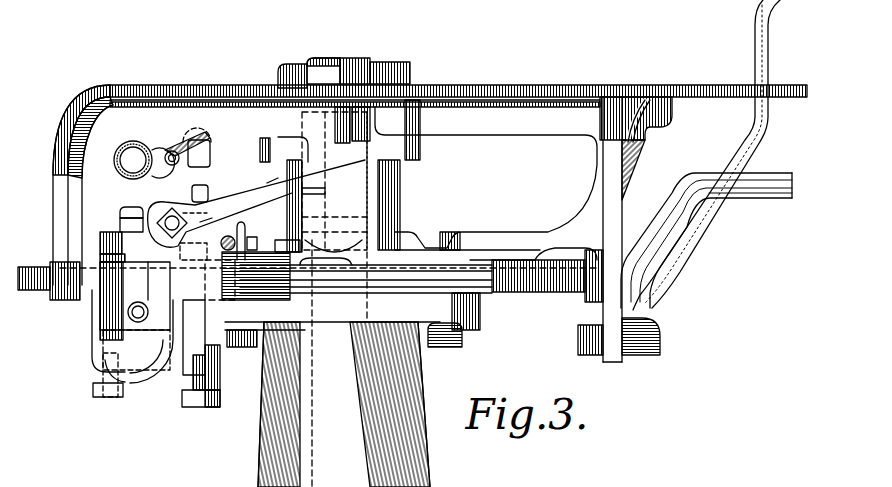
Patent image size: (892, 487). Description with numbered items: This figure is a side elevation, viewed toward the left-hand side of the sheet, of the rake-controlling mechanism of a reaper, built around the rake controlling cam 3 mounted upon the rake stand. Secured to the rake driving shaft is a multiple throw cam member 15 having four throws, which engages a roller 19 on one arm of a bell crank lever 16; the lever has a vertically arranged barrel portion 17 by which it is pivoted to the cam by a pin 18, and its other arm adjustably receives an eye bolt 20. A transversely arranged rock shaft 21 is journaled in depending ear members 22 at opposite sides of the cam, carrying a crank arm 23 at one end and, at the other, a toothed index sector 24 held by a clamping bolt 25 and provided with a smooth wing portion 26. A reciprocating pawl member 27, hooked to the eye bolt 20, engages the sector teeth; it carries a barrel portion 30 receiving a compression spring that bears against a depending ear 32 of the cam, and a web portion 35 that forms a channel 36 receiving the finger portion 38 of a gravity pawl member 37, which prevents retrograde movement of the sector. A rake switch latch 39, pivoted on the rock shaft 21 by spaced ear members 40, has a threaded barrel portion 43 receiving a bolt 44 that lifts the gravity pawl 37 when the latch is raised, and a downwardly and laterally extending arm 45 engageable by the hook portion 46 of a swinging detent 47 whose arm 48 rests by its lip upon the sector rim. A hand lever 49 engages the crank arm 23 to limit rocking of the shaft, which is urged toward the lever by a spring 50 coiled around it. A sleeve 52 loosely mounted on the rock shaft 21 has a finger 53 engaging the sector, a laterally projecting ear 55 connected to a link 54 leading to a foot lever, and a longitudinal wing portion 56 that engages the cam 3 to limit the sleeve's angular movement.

The rake controlling cam 3 is at (532, 86).
The multiple throw cam member 15 is at (421, 148).
The bell crank lever 16 is at (232, 205).
The barrel portion 17 is at (402, 191).
The pin 18 is at (380, 238).
The roller 19 is at (242, 197).
The eye bolt 20 is at (147, 215).
The rock shaft 21 is at (364, 293).
The depending ear members 22 is at (58, 292).
The crank arm 23 is at (692, 176).
The toothed index sector 24 is at (157, 254).
The clamping bolt 25 is at (93, 338).
The wing portion 26 is at (190, 302).
The reciprocating pawl member 27 is at (152, 148).
The barrel portion 30 is at (150, 168).
The depending ear 32 is at (202, 160).
The web portion 35 is at (178, 145).
The channel 36 is at (267, 183).
The gravity pawl member 37 is at (208, 192).
The finger portion 38 is at (205, 221).
The rake switch latch 39 is at (92, 357).
The ear members 40 is at (128, 312).
The barrel portion 43 is at (217, 368).
The bolt 44 is at (195, 407).
The arm 45 is at (100, 397).
The hook portion 46 is at (116, 397).
The swinging detent 47 is at (100, 256).
The arm 48 is at (100, 242).
The hand lever 49 is at (755, 22).
The spring 50 is at (540, 292).
The sleeve 52 is at (287, 296).
The finger 53 is at (217, 260).
The link 54 is at (220, 244).
The ear 55 is at (302, 224).
The wing portion 56 is at (300, 294).